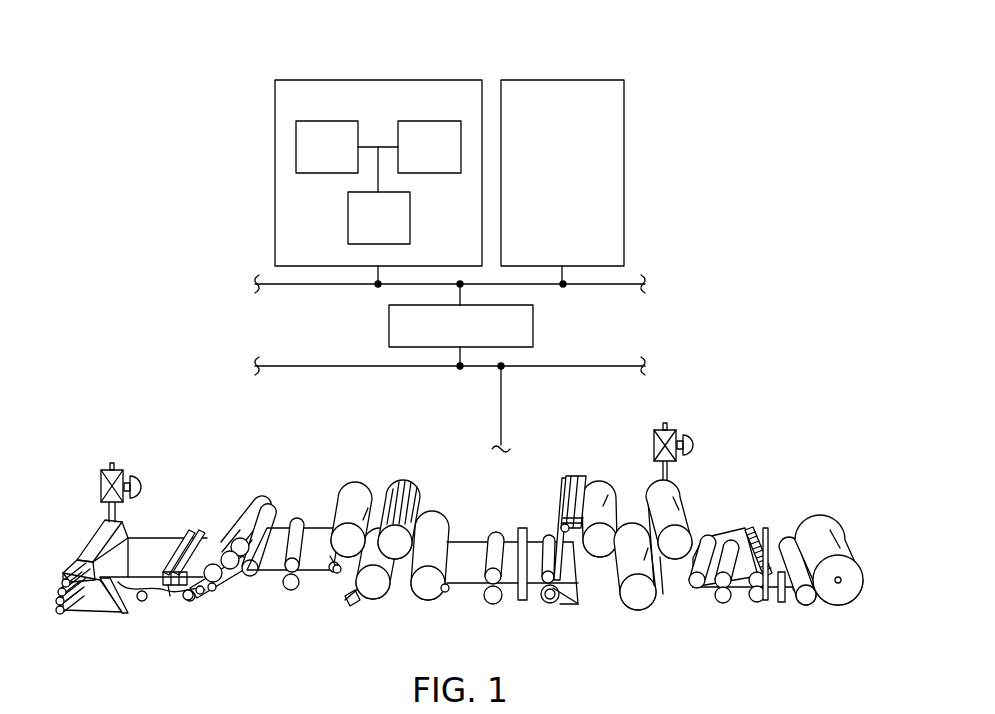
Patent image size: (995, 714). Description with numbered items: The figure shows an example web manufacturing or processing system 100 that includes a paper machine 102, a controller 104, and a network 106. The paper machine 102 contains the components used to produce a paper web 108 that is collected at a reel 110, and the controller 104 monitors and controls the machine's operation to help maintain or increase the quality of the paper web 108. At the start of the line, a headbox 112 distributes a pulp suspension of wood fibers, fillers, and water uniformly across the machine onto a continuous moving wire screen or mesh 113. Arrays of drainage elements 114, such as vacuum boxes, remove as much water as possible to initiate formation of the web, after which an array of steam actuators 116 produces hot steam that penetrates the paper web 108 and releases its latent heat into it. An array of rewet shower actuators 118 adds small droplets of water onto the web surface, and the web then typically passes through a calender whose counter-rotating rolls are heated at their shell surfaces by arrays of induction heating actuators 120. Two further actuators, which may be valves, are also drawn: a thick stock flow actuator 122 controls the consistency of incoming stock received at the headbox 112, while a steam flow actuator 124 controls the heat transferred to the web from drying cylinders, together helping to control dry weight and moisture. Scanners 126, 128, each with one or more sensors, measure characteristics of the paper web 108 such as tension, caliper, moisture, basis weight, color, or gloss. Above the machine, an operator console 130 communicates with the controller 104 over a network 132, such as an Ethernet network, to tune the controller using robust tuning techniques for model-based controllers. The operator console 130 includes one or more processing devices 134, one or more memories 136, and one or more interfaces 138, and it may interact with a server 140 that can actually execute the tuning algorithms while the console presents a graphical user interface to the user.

The web manufacturing or processing system 100 is at (557, 57).
The paper machine 102 is at (253, 451).
The controller 104 is at (533, 325).
The network 106 is at (337, 370).
The paper web 108 is at (268, 576).
The reel 110 is at (838, 605).
The headbox 112 is at (76, 557).
The wire screen or mesh 113 is at (155, 598).
The drainage elements 114 is at (188, 597).
The steam actuators 116 is at (360, 599).
The rewet shower actuators 118 is at (571, 472).
The induction heating actuators 120 is at (718, 607).
The thick stock flow actuator 122 is at (144, 487).
The steam flow actuator 124 is at (698, 444).
The scanner 126 is at (522, 604).
The scanner 128 is at (767, 529).
The operator console 130 is at (343, 75).
The network 132 is at (337, 288).
The processing device 134 is at (347, 158).
The memory 136 is at (449, 158).
The interface 138 is at (398, 231).
The server 140 is at (582, 202).